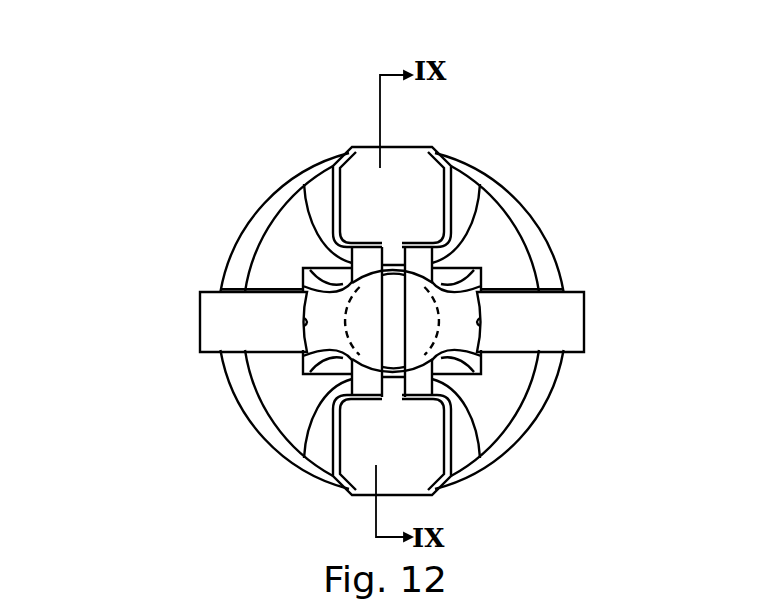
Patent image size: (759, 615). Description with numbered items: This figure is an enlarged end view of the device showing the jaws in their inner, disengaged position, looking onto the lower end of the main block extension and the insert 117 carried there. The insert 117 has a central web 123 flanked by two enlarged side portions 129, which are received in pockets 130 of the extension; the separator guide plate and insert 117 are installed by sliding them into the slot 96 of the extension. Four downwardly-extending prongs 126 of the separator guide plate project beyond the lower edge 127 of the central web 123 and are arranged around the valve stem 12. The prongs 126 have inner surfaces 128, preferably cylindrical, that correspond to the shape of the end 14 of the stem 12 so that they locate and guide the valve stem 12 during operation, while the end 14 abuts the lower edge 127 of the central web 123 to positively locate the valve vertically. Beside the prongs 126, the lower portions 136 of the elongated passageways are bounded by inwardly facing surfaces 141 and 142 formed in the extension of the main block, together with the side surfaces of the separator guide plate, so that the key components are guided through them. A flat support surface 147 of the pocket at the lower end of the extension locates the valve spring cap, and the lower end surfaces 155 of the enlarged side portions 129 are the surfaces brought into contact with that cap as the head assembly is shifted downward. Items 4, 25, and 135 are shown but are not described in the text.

The shaft 4 is at (212, 316).
The valve stem 12 is at (252, 369).
The end of stem 14 is at (355, 335).
The bearing surface 25 is at (303, 322).
The slot 96 is at (313, 480).
The insert 117 is at (414, 150).
The central web 123 is at (486, 291).
The prongs 126 is at (303, 185).
The lower edge of central web 127 is at (392, 330).
The inner surfaces 128 is at (308, 272).
The enlarged side portions 129 is at (414, 208).
The pockets 130 is at (450, 153).
The lower flange surface 135 is at (490, 357).
The lower portions of passageways 136 is at (302, 268).
The inwardly facing surface 141 is at (578, 368).
The inwardly facing surface 142 is at (299, 249).
The flat support surface 147 is at (316, 274).
The lower end surfaces 155 is at (358, 187).